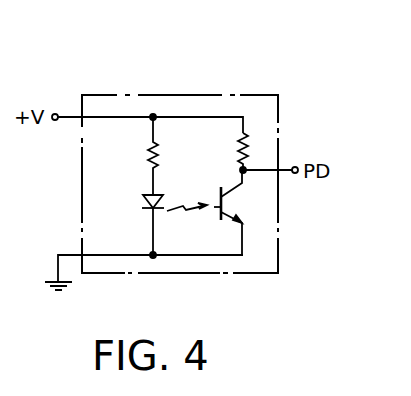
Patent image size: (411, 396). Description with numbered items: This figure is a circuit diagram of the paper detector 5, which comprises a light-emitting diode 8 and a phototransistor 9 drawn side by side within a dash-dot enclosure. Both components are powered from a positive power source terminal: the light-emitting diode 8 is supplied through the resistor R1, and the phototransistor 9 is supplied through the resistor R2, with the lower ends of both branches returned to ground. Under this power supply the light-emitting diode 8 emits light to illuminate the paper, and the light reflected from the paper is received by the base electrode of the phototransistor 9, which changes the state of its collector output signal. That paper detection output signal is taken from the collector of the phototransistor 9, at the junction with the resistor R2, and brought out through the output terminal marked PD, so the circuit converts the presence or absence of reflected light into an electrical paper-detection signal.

The paper detector 5 is at (196, 94).
The resistor R1 is at (145, 153).
The resistor R2 is at (237, 140).
The light-emitting diode 8 is at (144, 197).
The phototransistor 9 is at (227, 207).